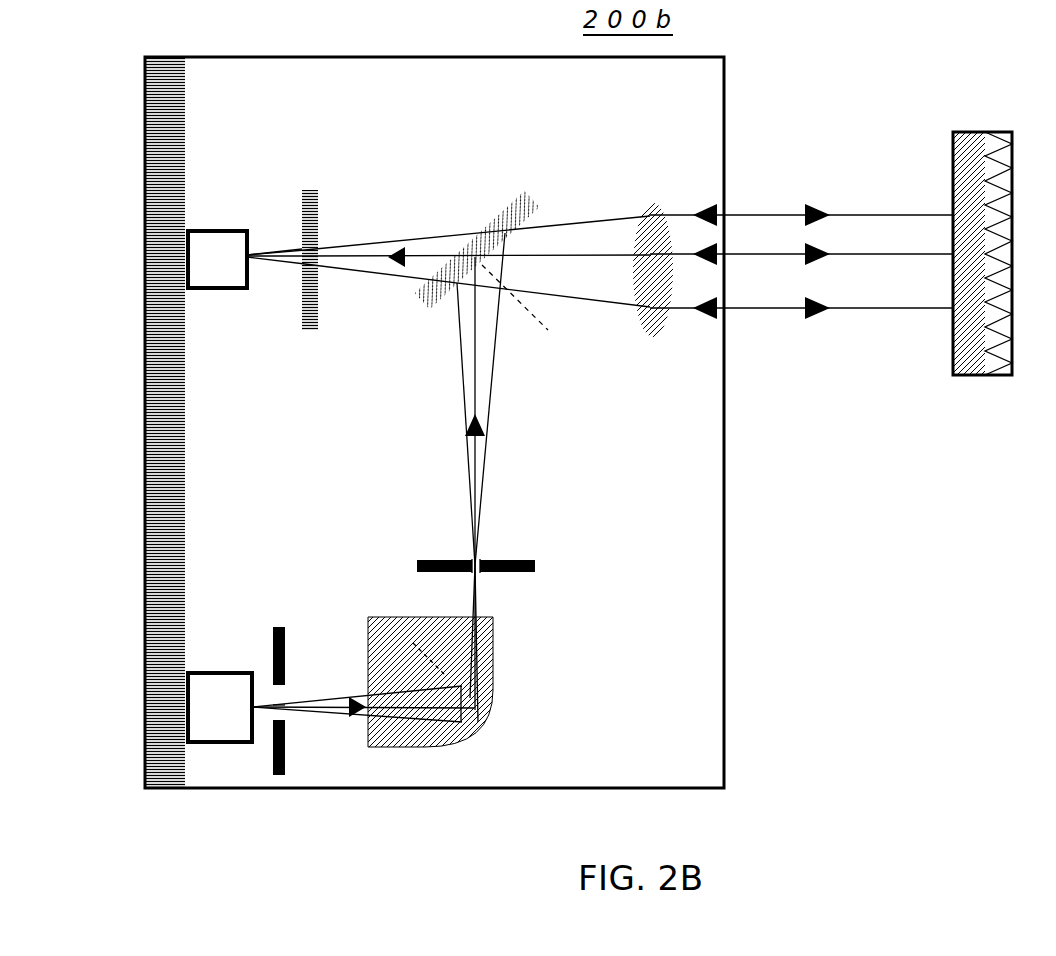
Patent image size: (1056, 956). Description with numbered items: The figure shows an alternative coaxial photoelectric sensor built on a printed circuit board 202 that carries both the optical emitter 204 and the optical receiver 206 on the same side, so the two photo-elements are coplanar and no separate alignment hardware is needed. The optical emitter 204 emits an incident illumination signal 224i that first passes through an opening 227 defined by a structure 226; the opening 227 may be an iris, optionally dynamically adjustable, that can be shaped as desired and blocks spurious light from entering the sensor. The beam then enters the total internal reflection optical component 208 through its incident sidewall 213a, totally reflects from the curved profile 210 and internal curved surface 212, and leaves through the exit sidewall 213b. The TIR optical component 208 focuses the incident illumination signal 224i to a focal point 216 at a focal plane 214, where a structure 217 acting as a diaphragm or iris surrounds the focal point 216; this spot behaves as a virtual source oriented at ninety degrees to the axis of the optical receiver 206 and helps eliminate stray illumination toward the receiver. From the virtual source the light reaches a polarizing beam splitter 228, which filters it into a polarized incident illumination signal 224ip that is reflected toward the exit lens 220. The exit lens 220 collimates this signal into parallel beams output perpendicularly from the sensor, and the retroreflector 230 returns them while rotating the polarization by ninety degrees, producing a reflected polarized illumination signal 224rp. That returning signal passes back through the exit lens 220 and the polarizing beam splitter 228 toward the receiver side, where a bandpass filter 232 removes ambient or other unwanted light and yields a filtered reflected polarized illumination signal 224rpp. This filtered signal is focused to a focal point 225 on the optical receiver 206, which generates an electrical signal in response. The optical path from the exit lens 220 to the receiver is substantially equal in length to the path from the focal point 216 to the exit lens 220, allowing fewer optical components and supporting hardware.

The printed circuit board 202 is at (192, 96).
The optical emitter 204 is at (208, 671).
The optical receiver 206 is at (207, 230).
The total internal reflection optical component 208 is at (453, 681).
The curved profile 210 is at (495, 631).
The internal curved surface 212 is at (407, 756).
The incident sidewall 213a is at (368, 670).
The exit sidewall 213b is at (442, 612).
The focal plane 214 is at (410, 556).
The focal point 216 is at (485, 552).
The structure 217 is at (520, 574).
The exit lens 220 is at (666, 208).
The incident illumination signal 224i is at (499, 430).
The polarized incident illumination signal 224ip is at (820, 328).
The reflected polarized illumination signal 224rp is at (390, 294).
The filtered reflected polarized illumination signal 224rpp is at (277, 246).
The focal point 225 is at (260, 264).
The structure 226 is at (284, 640).
The opening 227 is at (263, 684).
The polarizing beam splitter 228 is at (493, 222).
The retroreflector 230 is at (948, 152).
The bandpass filter 232 is at (320, 200).